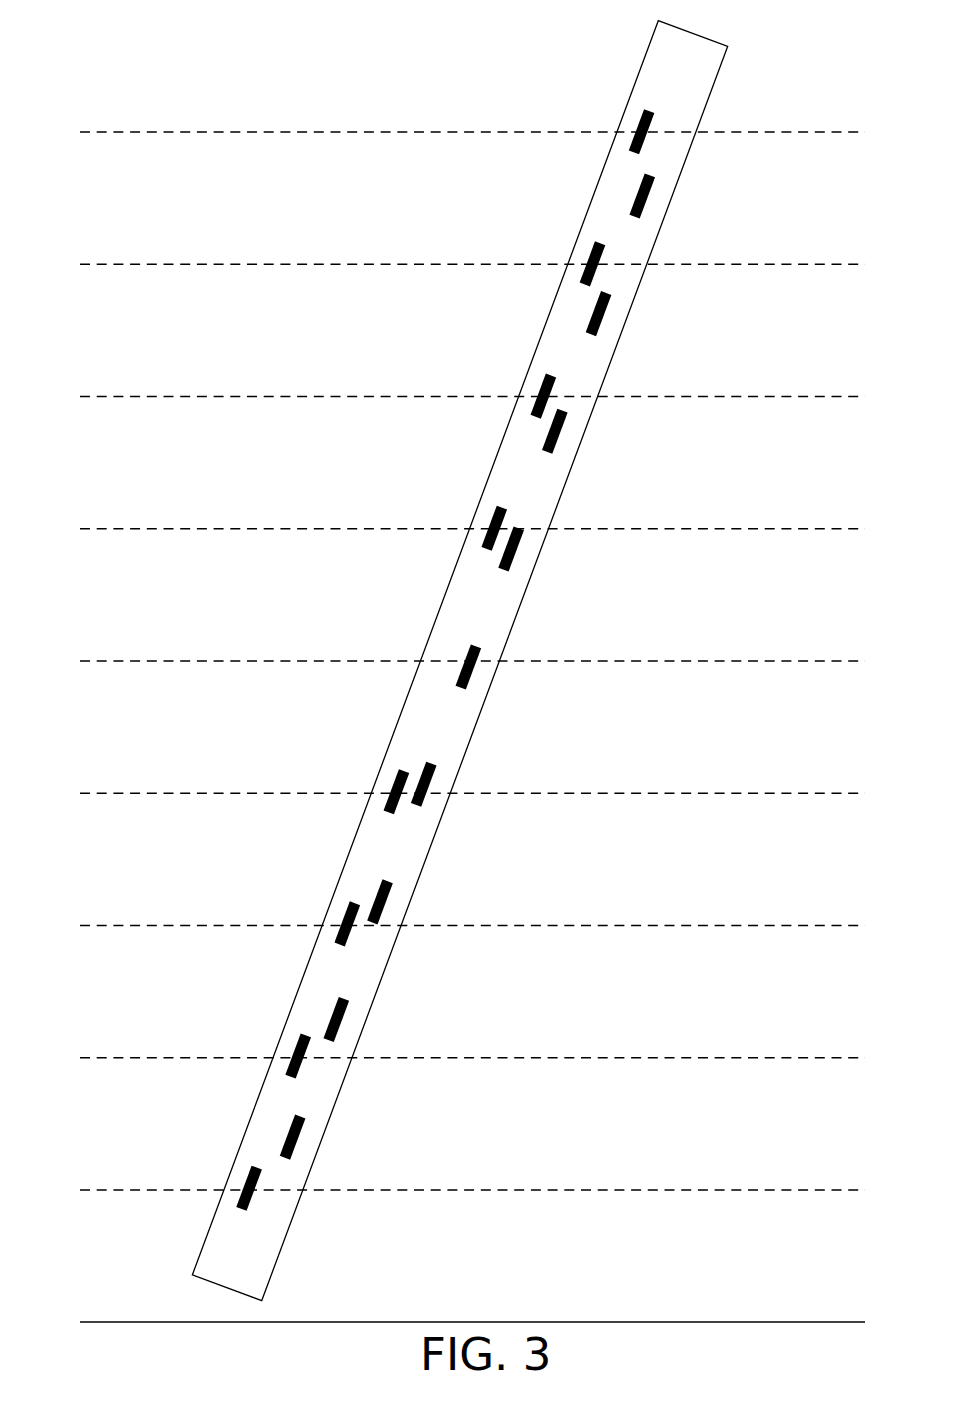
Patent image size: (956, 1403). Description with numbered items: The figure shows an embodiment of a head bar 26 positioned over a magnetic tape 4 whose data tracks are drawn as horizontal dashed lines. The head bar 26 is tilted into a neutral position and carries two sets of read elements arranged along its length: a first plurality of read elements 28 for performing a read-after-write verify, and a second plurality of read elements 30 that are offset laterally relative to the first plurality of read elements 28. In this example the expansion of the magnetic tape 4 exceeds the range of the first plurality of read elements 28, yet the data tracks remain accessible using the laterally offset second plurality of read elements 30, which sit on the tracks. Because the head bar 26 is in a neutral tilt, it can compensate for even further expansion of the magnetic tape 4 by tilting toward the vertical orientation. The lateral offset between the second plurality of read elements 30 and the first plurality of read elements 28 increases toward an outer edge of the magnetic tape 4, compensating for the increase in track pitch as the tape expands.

The magnetic tape 4 is at (80, 45).
The head bar 26 is at (455, 661).
The second plurality of read elements 30 is at (445, 660).
The first plurality of read elements 28 is at (468, 666).